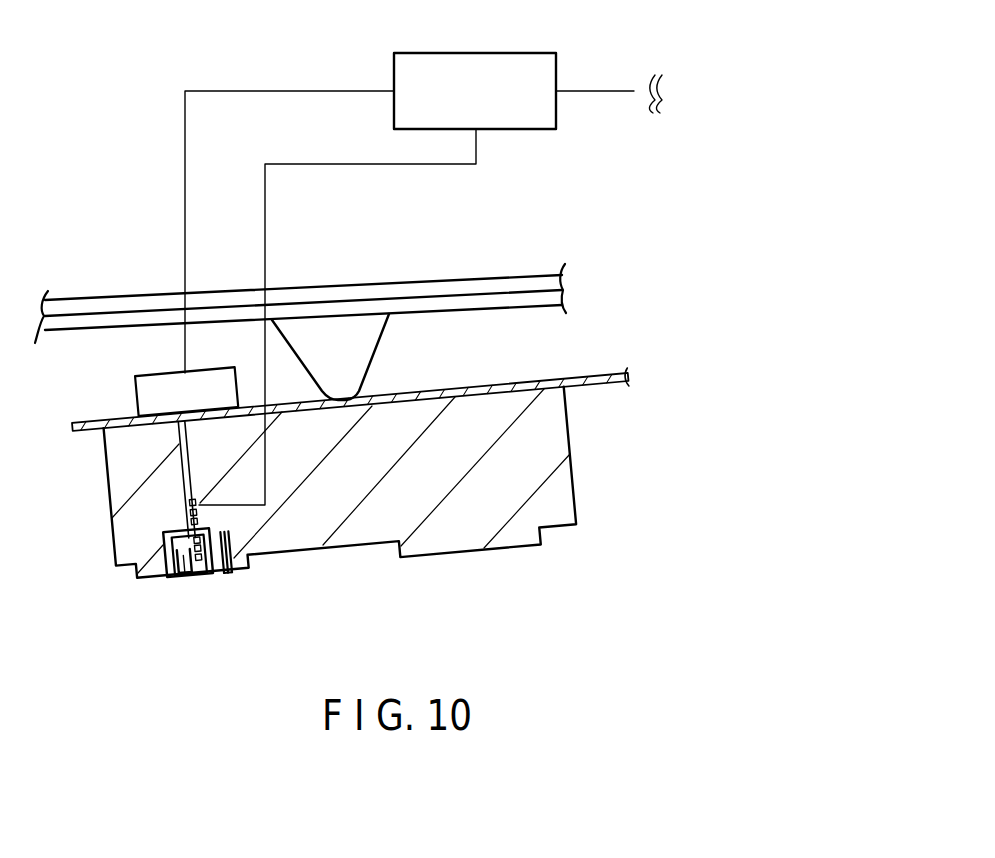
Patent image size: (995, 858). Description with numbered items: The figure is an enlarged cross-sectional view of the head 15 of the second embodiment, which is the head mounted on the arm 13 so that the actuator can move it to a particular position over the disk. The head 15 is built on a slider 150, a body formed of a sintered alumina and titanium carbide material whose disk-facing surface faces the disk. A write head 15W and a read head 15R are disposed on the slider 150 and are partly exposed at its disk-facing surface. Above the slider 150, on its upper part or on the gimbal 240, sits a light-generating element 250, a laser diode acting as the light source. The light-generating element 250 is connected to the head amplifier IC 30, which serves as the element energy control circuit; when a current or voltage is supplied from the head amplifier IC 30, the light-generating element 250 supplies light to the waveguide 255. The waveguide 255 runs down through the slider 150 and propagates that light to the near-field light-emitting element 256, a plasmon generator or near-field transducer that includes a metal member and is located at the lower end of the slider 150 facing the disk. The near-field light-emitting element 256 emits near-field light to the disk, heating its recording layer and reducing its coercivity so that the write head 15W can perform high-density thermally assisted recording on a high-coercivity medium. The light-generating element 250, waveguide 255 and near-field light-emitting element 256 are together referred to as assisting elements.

The head amplifier IC 30 is at (529, 53).
The arm 13 is at (485, 278).
The gimbal 240 is at (603, 374).
The light-generating element 250 is at (148, 392).
The waveguide 255 is at (180, 490).
The near-field light-emitting element 256 is at (188, 570).
The slider 150 is at (285, 542).
The head 15 is at (330, 494).
The write head 15W is at (168, 586).
The read head 15R is at (247, 574).